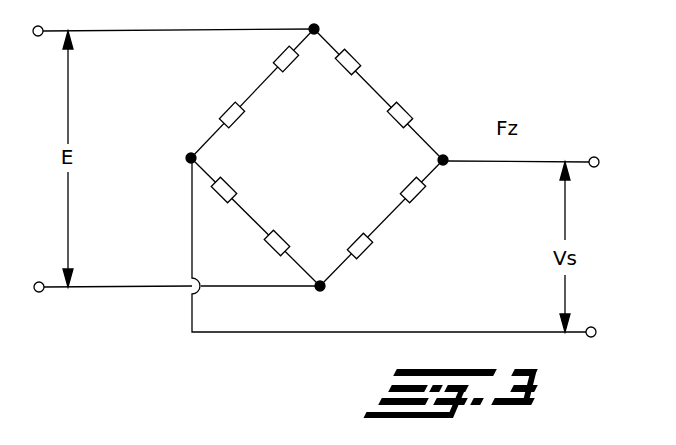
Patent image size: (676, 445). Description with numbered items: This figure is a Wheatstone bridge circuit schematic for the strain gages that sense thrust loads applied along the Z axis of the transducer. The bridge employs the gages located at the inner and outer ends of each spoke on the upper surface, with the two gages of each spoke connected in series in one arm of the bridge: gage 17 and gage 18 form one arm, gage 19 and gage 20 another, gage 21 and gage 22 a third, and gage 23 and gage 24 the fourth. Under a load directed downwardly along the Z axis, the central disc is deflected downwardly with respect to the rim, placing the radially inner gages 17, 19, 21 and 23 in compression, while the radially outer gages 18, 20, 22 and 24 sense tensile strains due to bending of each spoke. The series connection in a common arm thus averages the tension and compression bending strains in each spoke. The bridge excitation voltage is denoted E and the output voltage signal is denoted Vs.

The gage 17 is at (275, 52).
The gage 18 is at (356, 54).
The gage 19 is at (221, 109).
The gage 20 is at (215, 200).
The gage 21 is at (422, 198).
The gage 22 is at (408, 108).
The gage 23 is at (371, 251).
The gage 24 is at (265, 250).